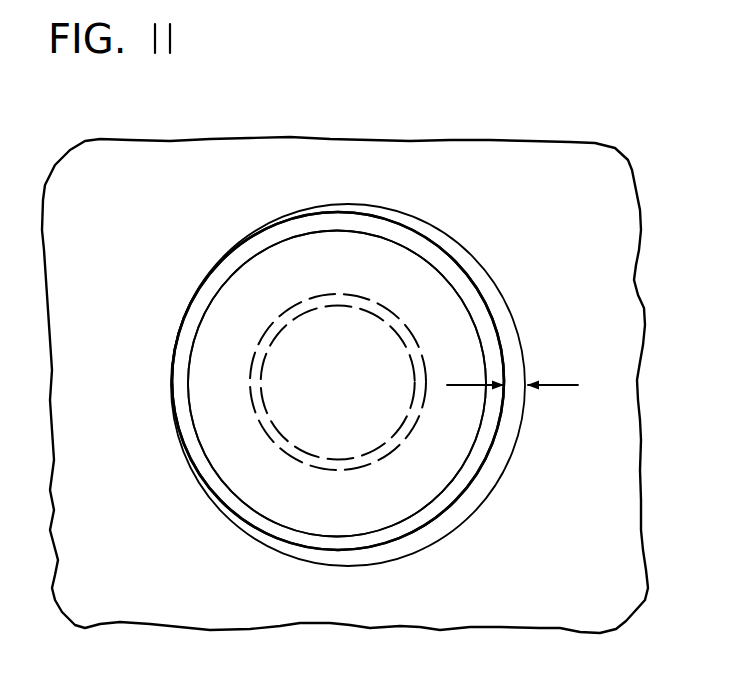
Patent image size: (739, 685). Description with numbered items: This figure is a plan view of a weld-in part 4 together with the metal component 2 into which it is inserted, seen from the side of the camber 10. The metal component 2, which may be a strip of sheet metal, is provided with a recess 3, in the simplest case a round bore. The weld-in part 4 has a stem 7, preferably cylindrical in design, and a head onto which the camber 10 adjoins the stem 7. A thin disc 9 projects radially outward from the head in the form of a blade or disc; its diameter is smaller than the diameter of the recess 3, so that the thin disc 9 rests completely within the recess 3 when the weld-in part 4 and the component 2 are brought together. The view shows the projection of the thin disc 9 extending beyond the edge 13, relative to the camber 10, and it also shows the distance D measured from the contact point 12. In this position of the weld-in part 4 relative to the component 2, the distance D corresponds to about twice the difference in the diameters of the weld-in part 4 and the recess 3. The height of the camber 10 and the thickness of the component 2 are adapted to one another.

The metal component 2 is at (580, 162).
The recess 3 is at (496, 291).
The weld-in part 4 is at (283, 313).
The stem 7 is at (311, 416).
The thin disc 9 is at (462, 486).
The camber 10 is at (363, 263).
The contact point 12 is at (172, 378).
The edge 13 is at (478, 333).
The distance D is at (511, 395).